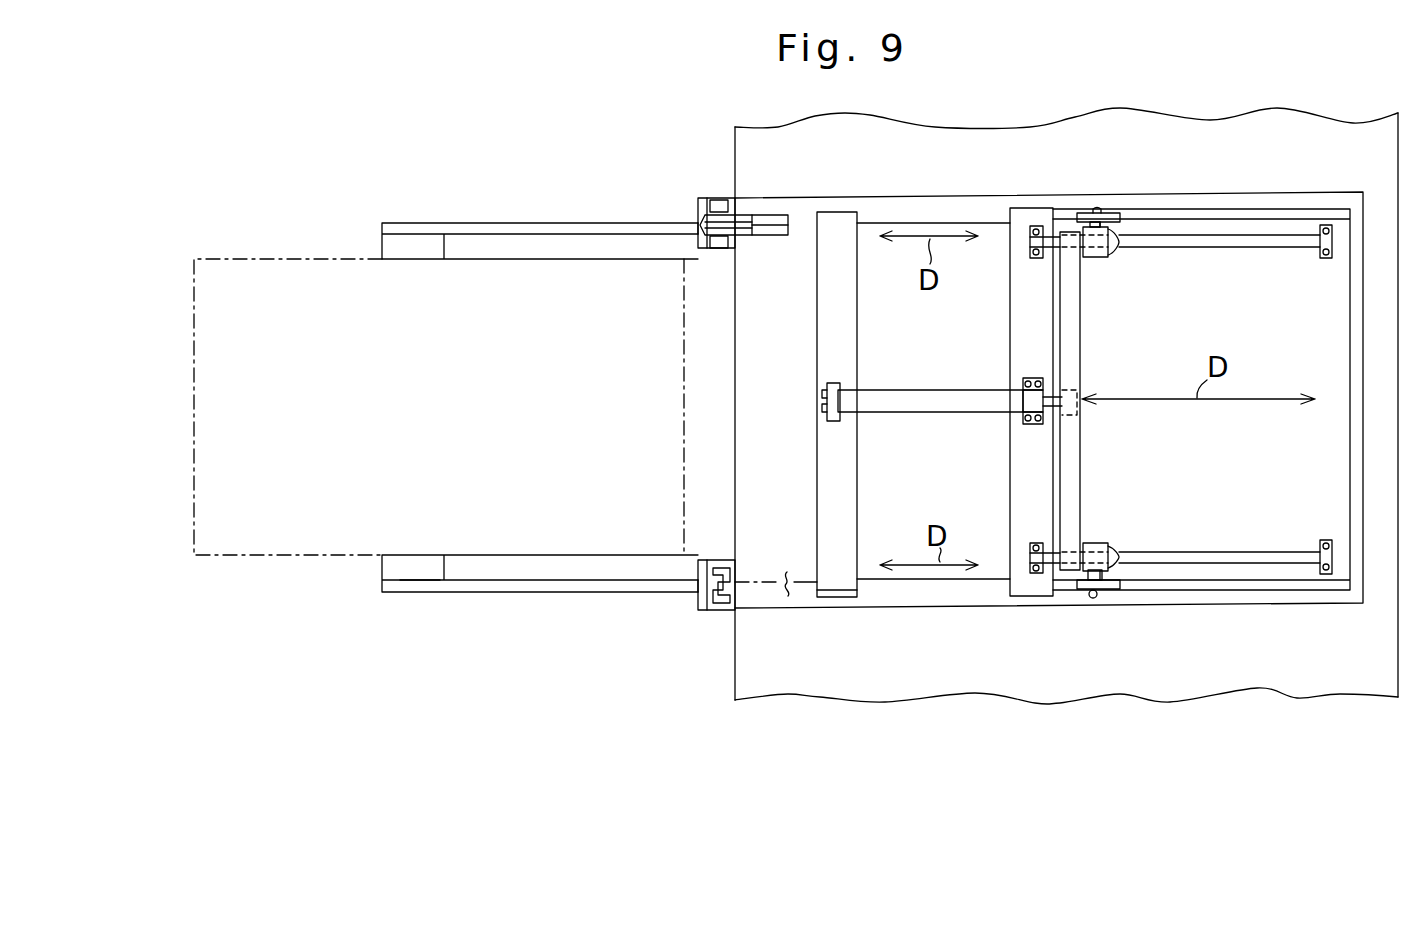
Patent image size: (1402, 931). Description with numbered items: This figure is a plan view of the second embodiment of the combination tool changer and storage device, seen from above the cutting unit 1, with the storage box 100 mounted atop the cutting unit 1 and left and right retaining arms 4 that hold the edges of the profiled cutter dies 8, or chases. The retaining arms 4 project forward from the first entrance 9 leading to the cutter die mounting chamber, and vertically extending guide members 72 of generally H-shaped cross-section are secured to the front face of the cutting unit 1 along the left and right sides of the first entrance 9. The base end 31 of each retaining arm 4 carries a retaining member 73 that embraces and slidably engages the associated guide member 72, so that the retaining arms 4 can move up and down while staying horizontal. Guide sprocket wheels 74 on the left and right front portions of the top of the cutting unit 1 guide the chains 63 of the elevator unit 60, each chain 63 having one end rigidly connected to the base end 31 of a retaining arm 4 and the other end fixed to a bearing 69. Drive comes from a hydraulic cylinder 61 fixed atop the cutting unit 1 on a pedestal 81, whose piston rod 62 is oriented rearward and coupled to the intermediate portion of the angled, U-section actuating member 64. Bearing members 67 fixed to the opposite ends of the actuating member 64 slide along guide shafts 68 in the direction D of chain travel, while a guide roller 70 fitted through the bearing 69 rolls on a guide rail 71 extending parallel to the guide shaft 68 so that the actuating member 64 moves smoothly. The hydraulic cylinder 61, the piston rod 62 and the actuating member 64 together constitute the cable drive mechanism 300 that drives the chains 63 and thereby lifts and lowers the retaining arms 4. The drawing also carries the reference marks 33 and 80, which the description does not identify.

The cutting unit 1 is at (985, 125).
The retaining arms 4 is at (568, 222).
The profiled cutter dies 8 is at (318, 560).
The first entrance 9 is at (735, 420).
The base end 31 is at (700, 210).
The rail inner face 33 is at (413, 573).
The elevator unit 60 is at (972, 382).
The hydraulic cylinder 61 is at (947, 406).
The piston rod 62 is at (1047, 410).
The chains 63 is at (840, 212).
The actuating member 64 is at (1075, 340).
The bearing members 67 is at (1100, 258).
The guide shafts 68 is at (1285, 248).
The bearing 69 is at (1110, 234).
The guide roller 70 is at (1097, 210).
The guide rail 71 is at (1262, 209).
The guide members 72 is at (716, 198).
The retaining member 73 is at (717, 560).
The guide sprocket wheels 74 is at (741, 236).
The column base 80 is at (835, 598).
The pedestal 81 is at (1032, 597).
The storage box 100 is at (946, 606).
The cable drive mechanism 300 is at (1004, 446).